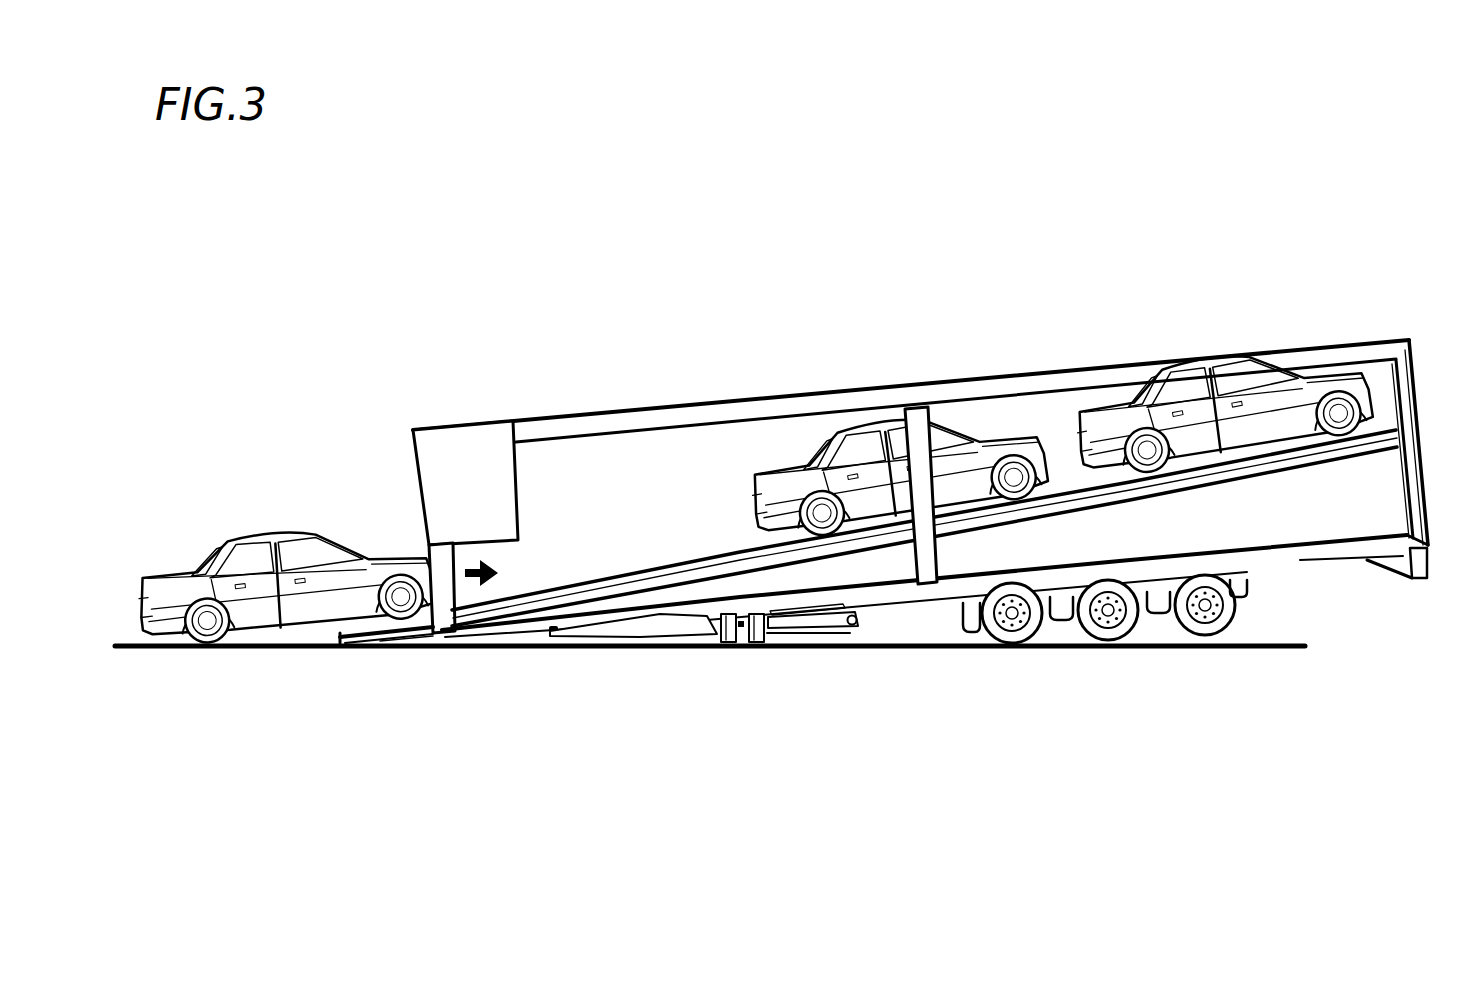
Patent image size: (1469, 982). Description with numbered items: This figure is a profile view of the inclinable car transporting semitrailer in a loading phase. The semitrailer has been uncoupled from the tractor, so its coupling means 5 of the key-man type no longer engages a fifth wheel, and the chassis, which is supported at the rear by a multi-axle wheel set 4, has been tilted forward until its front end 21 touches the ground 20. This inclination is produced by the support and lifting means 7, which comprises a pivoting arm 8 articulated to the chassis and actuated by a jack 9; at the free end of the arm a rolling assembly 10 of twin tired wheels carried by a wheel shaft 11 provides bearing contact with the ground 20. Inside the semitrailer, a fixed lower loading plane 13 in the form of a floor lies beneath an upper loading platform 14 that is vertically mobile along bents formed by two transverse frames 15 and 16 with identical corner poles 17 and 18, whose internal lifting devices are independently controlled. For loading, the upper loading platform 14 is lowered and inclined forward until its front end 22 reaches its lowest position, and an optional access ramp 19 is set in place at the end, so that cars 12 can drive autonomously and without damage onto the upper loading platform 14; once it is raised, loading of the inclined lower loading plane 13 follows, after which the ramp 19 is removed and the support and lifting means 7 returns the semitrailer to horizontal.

The multi-axle wheel set 4 is at (1114, 658).
The coupling means 5 is at (558, 652).
The support and lifting means 7 is at (784, 657).
The pivoting arm 8 is at (853, 626).
The jack 9 is at (807, 632).
The rolling assembly 10 is at (741, 658).
The wheel shaft 11 is at (709, 640).
The cars 12 is at (262, 510).
The lower loading plane 13 is at (930, 597).
The upper loading platform 14 is at (875, 538).
The transverse frame 15 is at (428, 416).
The transverse frame 16 is at (1418, 333).
The corner pole 17 is at (432, 553).
The corner pole 18 is at (1403, 412).
The access ramp 19 is at (401, 657).
The ground 20 is at (1305, 648).
The front end of the semitrailer 21 is at (490, 650).
The front end of the upper platform 22 is at (427, 657).